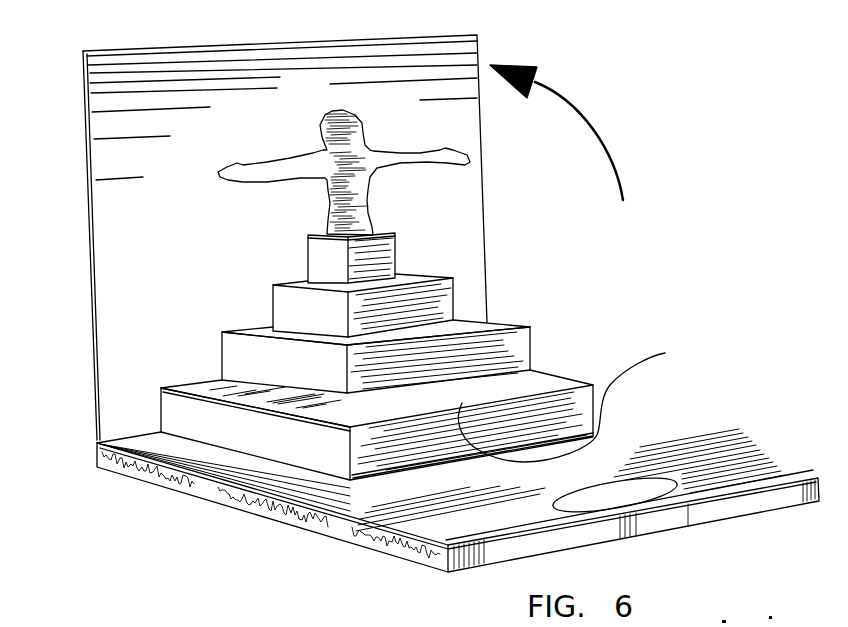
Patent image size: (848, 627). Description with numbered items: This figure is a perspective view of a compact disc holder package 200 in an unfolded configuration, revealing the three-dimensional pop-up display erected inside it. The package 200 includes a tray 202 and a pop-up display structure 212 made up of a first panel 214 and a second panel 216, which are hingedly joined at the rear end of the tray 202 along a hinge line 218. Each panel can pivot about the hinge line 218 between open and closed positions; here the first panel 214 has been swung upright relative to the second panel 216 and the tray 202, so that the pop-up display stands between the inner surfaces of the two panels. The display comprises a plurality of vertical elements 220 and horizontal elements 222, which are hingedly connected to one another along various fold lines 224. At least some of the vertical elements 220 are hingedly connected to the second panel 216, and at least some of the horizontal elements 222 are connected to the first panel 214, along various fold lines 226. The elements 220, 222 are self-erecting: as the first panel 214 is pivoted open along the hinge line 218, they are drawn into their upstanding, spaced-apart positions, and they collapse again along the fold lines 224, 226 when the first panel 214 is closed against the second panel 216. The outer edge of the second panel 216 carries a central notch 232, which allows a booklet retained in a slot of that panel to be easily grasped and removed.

The compact disc holder package 200 is at (672, 184).
The tray 202 is at (252, 508).
The pop-up display structure 212 is at (655, 298).
The first panel 214 is at (477, 37).
The second panel 216 is at (712, 453).
The hinge line 218 is at (128, 438).
The vertical elements 220 is at (368, 192).
The horizontal elements 222 is at (497, 327).
The fold lines 224 is at (376, 235).
The fold lines 226 is at (257, 331).
The central notch 232 is at (612, 484).